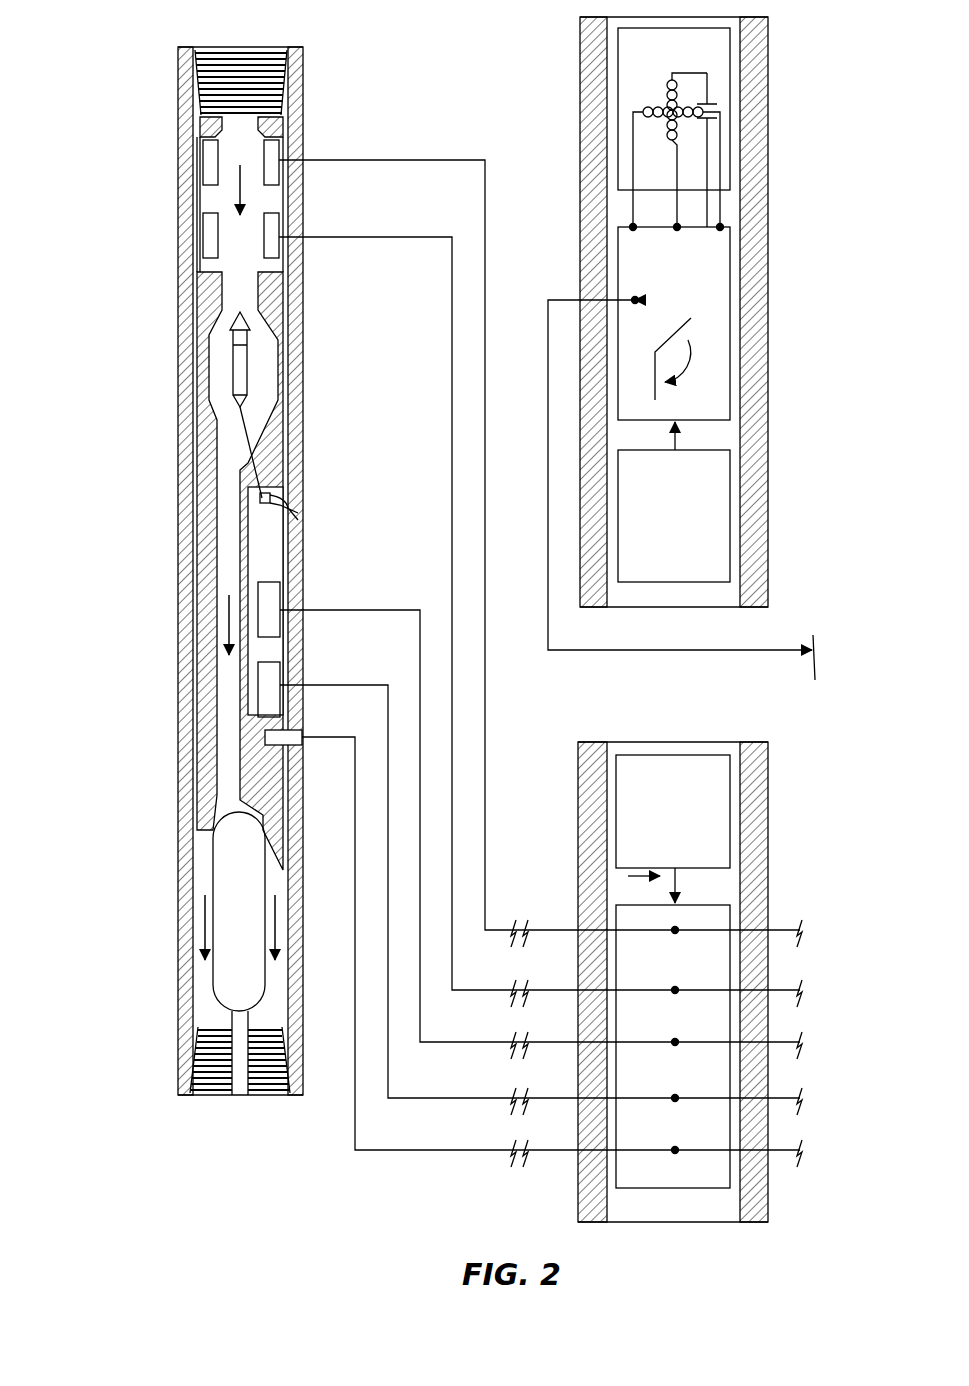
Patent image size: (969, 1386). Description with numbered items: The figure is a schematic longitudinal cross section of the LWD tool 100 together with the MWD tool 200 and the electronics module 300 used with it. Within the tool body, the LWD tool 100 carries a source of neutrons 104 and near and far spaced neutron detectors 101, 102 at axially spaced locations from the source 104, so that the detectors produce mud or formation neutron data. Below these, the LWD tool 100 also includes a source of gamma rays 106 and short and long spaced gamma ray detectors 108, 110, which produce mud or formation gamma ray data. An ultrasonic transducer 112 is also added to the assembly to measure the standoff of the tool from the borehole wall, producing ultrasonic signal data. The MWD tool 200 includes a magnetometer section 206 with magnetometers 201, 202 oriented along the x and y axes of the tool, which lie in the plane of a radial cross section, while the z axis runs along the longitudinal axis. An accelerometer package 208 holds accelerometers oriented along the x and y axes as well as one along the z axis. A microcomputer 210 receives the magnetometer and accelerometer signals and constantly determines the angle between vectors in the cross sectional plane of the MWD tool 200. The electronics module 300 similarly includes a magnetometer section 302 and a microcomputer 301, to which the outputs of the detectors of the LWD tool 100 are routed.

The LWD tool 100 is at (150, 85).
The neutron detector 101 is at (210, 240).
The neutron detector 102 is at (210, 163).
The source of neutrons 104 is at (240, 372).
The source of gamma rays 106 is at (284, 490).
The gamma ray detector 108 is at (270, 600).
The gamma ray detector 110 is at (270, 683).
The ultrasonic transducer 112 is at (282, 740).
The MWD tool 200 is at (800, 178).
The magnetometer 201 is at (645, 112).
The magnetometer 202 is at (707, 73).
The magnetometer section 206 is at (618, 65).
The accelerometer package 208 is at (730, 512).
The microcomputer 210 is at (730, 315).
The electronics module 300 is at (598, 738).
The microcomputer 301 is at (668, 1172).
The magnetometer section 302 is at (616, 812).